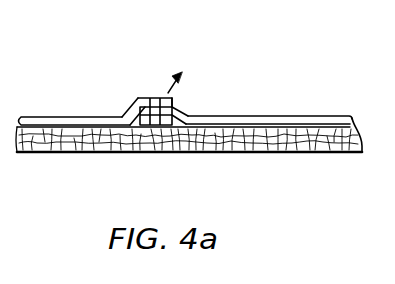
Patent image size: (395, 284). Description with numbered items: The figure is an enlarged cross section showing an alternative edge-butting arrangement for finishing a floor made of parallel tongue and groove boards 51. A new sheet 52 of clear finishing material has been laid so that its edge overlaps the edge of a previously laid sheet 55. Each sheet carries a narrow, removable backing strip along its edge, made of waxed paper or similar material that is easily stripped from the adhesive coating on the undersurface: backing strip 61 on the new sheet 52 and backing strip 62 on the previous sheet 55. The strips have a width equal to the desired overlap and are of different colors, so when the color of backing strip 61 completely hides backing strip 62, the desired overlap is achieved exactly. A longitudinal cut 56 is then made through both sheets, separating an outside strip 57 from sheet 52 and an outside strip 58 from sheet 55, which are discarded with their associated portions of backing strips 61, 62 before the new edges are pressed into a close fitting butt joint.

The tongue and groove boards 51 is at (213, 153).
The sheet 52 is at (82, 117).
The sheet 55 is at (287, 123).
The longitudinal cut 56 is at (164, 96).
The outside strip 57 is at (175, 103).
The outside strip 58 is at (152, 97).
The backing strip 61 is at (196, 112).
The backing strip 62 is at (143, 118).